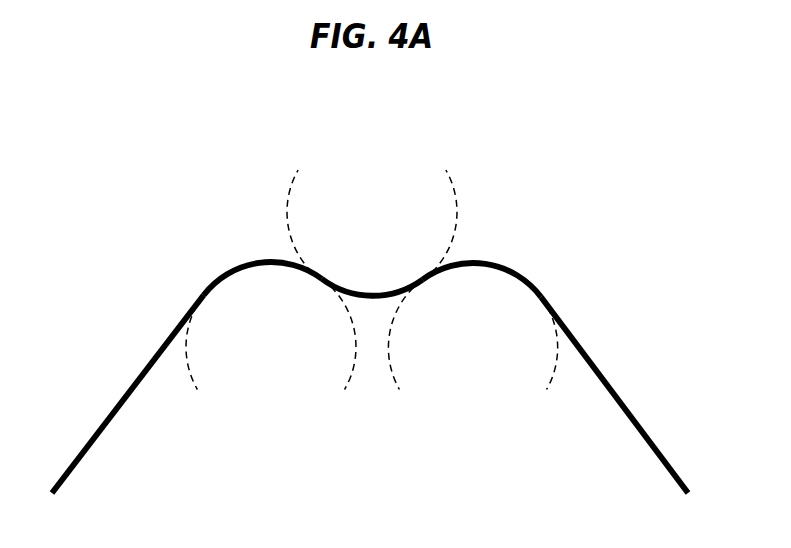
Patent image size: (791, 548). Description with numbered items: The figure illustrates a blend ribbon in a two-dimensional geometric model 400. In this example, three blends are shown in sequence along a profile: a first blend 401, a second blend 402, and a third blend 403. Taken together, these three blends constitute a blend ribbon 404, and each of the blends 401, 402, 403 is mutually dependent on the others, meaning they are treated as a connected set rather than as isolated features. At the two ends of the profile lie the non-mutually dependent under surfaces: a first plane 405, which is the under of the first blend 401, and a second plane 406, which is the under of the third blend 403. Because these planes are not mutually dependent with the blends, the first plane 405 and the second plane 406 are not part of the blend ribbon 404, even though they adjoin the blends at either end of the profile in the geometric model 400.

The 2D geometric model 400 is at (627, 262).
The blend 1 401 is at (271, 325).
The blend 2 402 is at (372, 233).
The blend 3 403 is at (472, 326).
The blend ribbon 404 is at (186, 274).
The plane 1 405 is at (125, 394).
The plane 2 406 is at (624, 395).